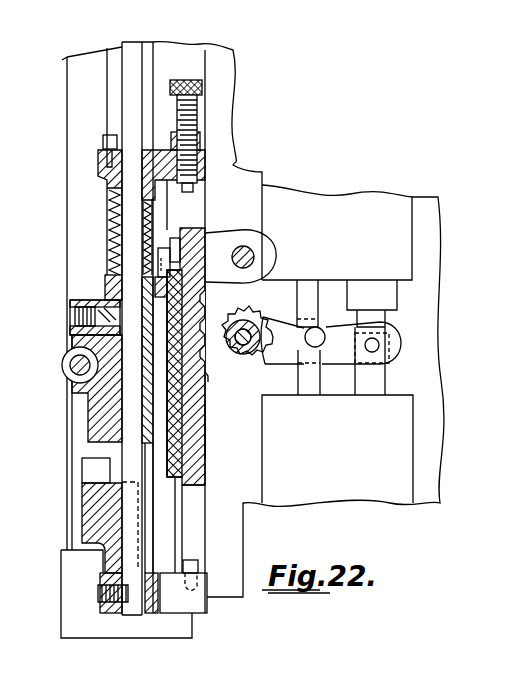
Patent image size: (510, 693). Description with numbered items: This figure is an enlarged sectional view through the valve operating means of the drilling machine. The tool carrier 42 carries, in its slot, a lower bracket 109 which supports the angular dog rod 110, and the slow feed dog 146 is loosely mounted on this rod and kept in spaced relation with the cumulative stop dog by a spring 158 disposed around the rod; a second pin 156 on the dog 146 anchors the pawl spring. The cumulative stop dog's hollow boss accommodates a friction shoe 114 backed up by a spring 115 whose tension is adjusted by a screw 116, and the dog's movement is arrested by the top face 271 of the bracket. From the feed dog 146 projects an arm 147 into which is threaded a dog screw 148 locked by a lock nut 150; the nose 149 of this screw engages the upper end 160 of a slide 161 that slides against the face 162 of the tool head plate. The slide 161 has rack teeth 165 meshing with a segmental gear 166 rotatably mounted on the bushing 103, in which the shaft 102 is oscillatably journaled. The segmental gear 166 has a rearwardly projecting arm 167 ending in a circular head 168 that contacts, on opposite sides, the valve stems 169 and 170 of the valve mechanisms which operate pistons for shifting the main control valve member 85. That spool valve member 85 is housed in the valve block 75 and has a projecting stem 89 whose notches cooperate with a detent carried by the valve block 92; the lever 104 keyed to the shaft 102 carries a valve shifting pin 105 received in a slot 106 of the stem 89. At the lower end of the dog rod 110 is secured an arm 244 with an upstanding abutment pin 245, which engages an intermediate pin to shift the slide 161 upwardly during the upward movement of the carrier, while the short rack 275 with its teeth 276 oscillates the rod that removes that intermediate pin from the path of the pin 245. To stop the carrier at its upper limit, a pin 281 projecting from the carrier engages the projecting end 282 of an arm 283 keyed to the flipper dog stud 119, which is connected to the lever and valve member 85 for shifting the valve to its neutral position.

The tool carrier 42 is at (74, 86).
The dog rod 110 is at (135, 46).
The second pin 156 is at (103, 140).
The slow feed dog 146 is at (106, 184).
The spring 158 is at (107, 242).
The friction shoe 114 is at (108, 305).
The spring 115 is at (106, 312).
The screw 116 is at (70, 318).
The top face 271 is at (66, 352).
The short rack 275 is at (72, 367).
The teeth 276 is at (90, 388).
The valve stem 169 is at (316, 293).
The bracket 109 is at (92, 528).
The arm 244 is at (176, 612).
The abutment pin 245 is at (198, 567).
The dog screw 148 is at (194, 122).
The lock nut 150 is at (196, 141).
The arm 147 is at (192, 171).
The nose 149 is at (196, 192).
The upper end 160 is at (201, 225).
The projecting end 282 is at (178, 243).
The pin 281 is at (163, 256).
The arm 283 is at (233, 238).
The stud 119 is at (255, 252).
The segmental gear 166 is at (247, 332).
The shaft 102 is at (262, 320).
The bushing 103 is at (240, 356).
The rack teeth 165 is at (213, 372).
The slide 161 is at (205, 430).
The face 162 is at (207, 492).
The arm 167 is at (283, 362).
The circular head 168 is at (317, 332).
The valve stem 170 is at (316, 380).
The lever 104 is at (348, 364).
The valve shifting pin 105 is at (393, 348).
The slot 106 is at (398, 364).
The valve block 92 is at (422, 386).
The valve block 75 is at (412, 243).
The valve member 85 is at (396, 299).
The stem 89 is at (386, 320).